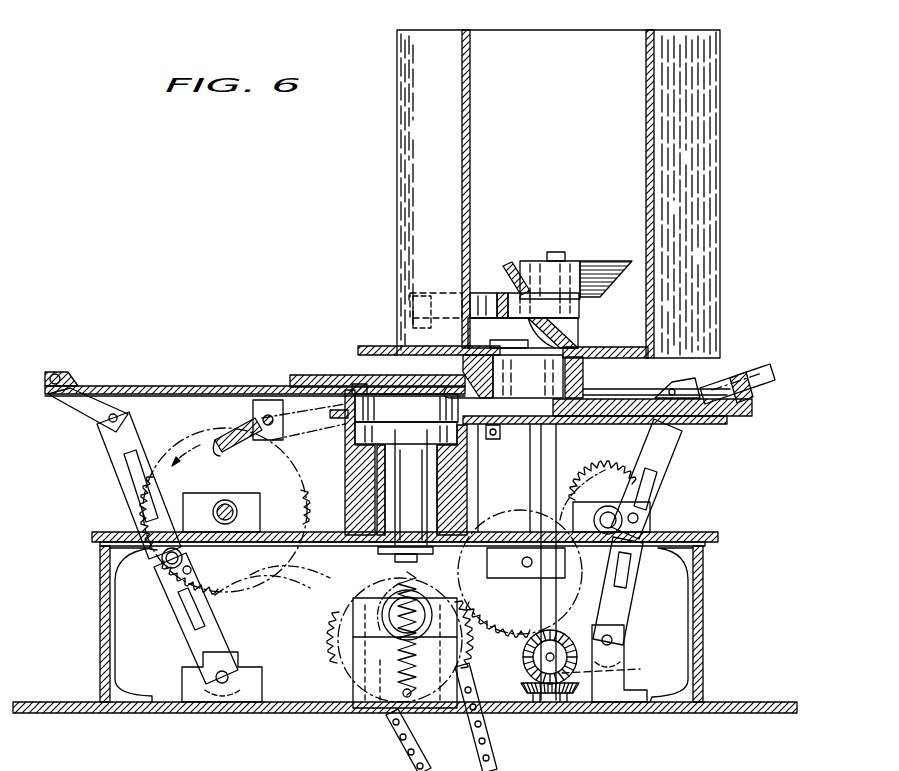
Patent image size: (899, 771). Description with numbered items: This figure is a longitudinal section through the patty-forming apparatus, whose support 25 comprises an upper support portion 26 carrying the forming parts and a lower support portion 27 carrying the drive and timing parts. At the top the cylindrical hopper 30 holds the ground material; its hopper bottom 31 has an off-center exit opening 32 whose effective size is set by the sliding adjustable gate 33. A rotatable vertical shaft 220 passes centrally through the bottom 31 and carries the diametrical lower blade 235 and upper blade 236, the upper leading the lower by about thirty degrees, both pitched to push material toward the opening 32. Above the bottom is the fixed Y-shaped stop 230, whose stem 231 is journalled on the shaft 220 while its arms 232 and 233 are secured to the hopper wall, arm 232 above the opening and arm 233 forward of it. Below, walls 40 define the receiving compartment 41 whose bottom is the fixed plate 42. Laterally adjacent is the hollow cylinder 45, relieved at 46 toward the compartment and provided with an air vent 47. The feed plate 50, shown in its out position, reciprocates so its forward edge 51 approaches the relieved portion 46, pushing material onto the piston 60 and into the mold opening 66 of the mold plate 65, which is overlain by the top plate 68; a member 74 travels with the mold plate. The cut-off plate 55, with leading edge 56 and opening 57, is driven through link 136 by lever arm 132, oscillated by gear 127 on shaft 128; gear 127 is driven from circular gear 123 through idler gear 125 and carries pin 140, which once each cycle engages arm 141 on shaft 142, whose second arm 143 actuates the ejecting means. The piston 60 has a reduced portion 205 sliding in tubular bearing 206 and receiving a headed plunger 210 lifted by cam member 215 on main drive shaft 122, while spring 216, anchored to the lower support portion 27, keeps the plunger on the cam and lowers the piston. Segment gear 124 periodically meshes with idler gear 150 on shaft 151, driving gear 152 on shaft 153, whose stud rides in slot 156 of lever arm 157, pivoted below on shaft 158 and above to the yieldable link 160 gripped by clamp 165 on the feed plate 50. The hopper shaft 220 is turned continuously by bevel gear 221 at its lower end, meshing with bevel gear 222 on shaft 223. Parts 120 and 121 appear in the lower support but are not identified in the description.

The hopper 30 is at (393, 160).
The fixed stop 230 is at (440, 290).
The stem 231 is at (508, 265).
The arm 232 is at (499, 295).
The upper blade 236 is at (540, 264).
The vertical shaft 220 is at (556, 252).
The lower blade 235 is at (565, 335).
The adjustable gate 33 is at (378, 345).
The arm 233 is at (436, 316).
The exit opening 32 is at (520, 345).
The hopper bottom 31 is at (633, 347).
The cut-off plate 55 is at (147, 386).
The opening 57 is at (236, 387).
The leading edge 56 is at (308, 377).
The top plate 68 is at (333, 376).
The mold plate 65 is at (358, 384).
The mold opening 66 is at (445, 385).
The clamp 165 is at (741, 375).
The yieldable link 160 is at (767, 368).
The means 40 is at (587, 380).
The relieved portion 46 is at (480, 396).
The receiving compartment 41 is at (530, 410).
The feed plate 50 is at (753, 408).
The link 136 is at (85, 400).
The rotatable shaft 142 is at (253, 415).
The arm 141 is at (215, 438).
The second arm 143 is at (298, 428).
The hollow cylinder 45 is at (348, 445).
The piston 60 is at (406, 419).
The member 74 is at (500, 432).
The forward edge 51 is at (535, 424).
The fixed plate 42 is at (585, 426).
The upper support portion 26 is at (78, 451).
The gear 127 is at (233, 486).
The shaft 128 is at (228, 503).
The reduced portion 205 is at (407, 496).
The air vent 47 is at (470, 450).
The tubular bearing 206 is at (468, 478).
The circular idler gear 150 is at (534, 512).
The headed plunger 210 is at (441, 556).
The gear 152 is at (598, 486).
The slot 156 is at (652, 483).
The lever arm 157 is at (672, 452).
The lever arm 132 is at (128, 482).
The shaft 153 is at (611, 515).
The support 25 is at (75, 533).
The pin 140 is at (185, 560).
The shaft 151 is at (524, 567).
The lower support portion 27 is at (75, 605).
The idler gear 125 is at (305, 590).
The cam member 215 is at (338, 598).
The circular gear 123 is at (330, 622).
The main drive shaft 122 is at (335, 645).
The segment gear 124 is at (405, 653).
The spring 216 is at (345, 660).
The bevel gear 222 is at (525, 645).
The shaft 158 is at (613, 640).
The shaft 223 is at (636, 669).
The link 120 is at (392, 740).
The link 121 is at (427, 676).
The bevel gear 221 is at (515, 712).